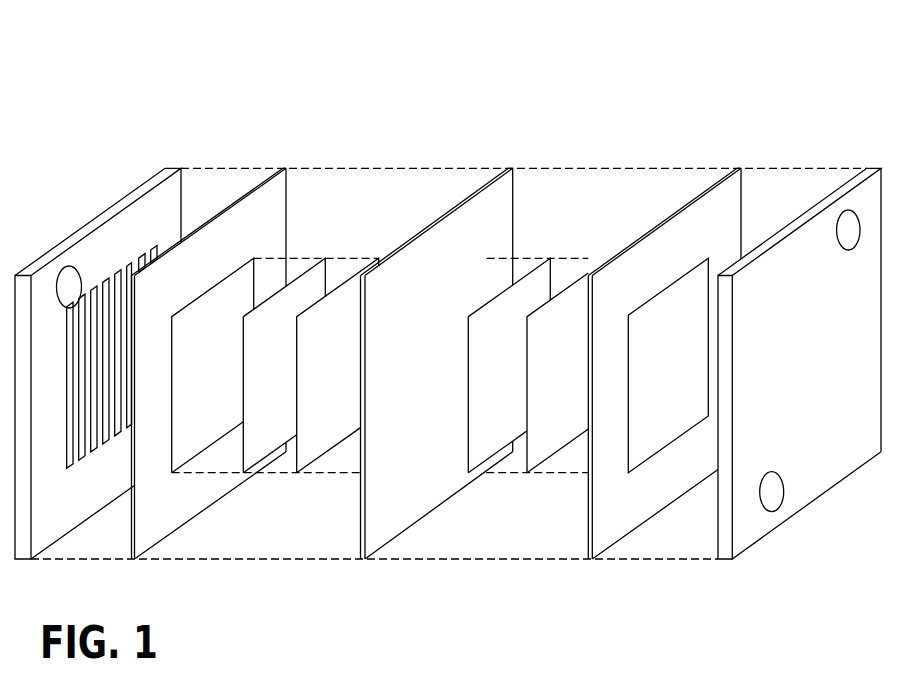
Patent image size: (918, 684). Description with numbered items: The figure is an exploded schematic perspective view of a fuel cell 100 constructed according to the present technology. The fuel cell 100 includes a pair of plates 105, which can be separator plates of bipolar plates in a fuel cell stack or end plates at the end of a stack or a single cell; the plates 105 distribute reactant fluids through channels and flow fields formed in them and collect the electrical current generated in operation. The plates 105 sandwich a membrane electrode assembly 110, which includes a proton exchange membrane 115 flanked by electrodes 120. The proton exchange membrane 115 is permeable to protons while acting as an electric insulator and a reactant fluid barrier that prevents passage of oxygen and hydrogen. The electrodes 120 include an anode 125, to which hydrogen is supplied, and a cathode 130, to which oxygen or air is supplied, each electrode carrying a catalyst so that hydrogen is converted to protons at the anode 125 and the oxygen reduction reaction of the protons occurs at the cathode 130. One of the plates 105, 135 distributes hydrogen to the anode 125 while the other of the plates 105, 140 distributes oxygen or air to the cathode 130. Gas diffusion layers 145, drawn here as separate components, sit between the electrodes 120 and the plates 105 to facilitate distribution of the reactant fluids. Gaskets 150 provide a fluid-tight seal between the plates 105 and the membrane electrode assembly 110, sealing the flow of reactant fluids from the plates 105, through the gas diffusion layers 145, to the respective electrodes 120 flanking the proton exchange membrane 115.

The fuel cell 100 is at (130, 89).
The plates 105 is at (448, 331).
The membrane electrode assembly 110 is at (525, 487).
The proton exchange membrane 115 is at (480, 188).
The electrodes 120 is at (438, 324).
The anode 125 is at (345, 281).
The cathode 130 is at (540, 262).
The plate distributing hydrogen 135 is at (58, 242).
The plate distributing oxygen or air 140 is at (838, 188).
The gas diffusion layers 145 is at (313, 265).
The gaskets 150 is at (243, 193).